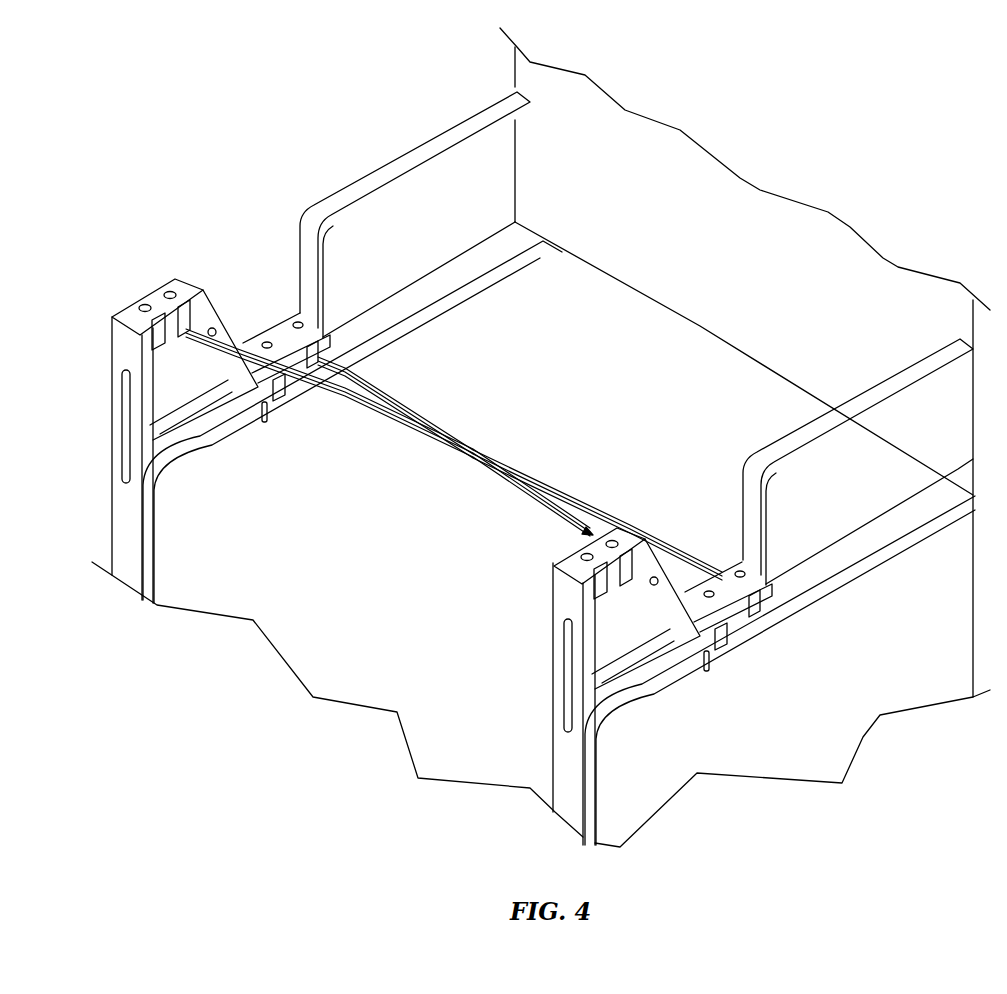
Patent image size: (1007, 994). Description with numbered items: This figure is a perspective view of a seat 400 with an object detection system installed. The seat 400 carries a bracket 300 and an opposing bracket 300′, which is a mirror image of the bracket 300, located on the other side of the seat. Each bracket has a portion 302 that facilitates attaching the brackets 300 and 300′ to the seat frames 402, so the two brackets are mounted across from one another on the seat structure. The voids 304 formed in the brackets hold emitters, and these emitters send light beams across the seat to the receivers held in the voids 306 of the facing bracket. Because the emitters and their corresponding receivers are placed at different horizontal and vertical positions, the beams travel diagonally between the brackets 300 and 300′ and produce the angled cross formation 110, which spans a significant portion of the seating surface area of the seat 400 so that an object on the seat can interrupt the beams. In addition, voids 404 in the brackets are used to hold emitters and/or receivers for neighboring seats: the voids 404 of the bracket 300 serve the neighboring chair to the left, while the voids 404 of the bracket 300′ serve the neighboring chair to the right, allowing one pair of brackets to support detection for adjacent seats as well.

The seat 400 is at (764, 84).
The seat frames 402 is at (416, 145).
The seat bracket 300 is at (145, 273).
The opposing bracket 300′ is at (648, 497).
The attachment portion 302 is at (297, 312).
The voids for emitters 304 is at (262, 320).
The voids for receivers 306 is at (185, 306).
The voids for neighboring seats 404 is at (158, 365).
The angled cross formation 110 is at (473, 452).